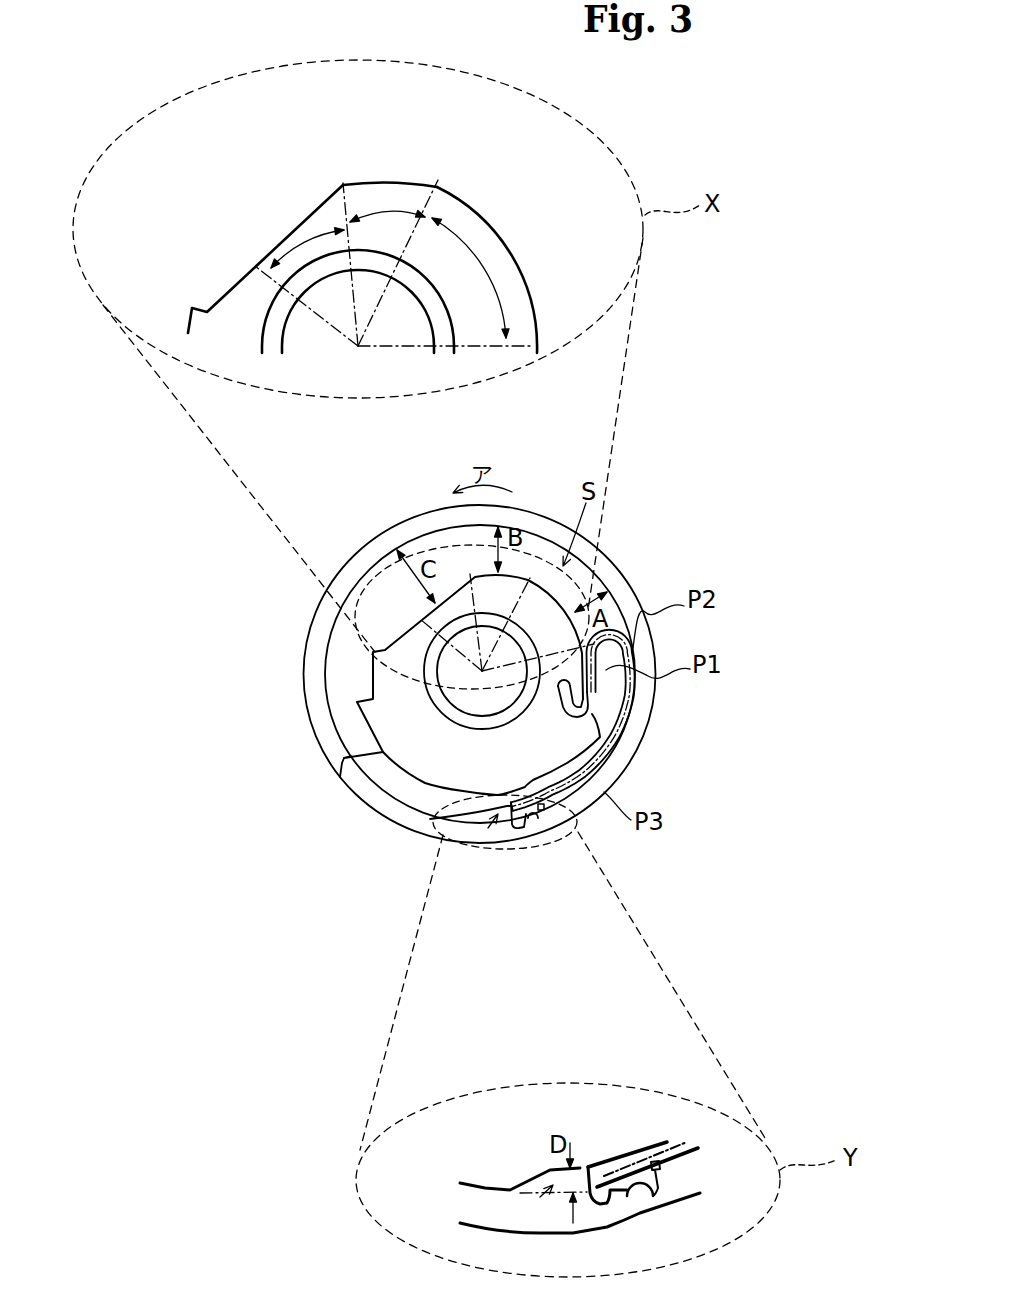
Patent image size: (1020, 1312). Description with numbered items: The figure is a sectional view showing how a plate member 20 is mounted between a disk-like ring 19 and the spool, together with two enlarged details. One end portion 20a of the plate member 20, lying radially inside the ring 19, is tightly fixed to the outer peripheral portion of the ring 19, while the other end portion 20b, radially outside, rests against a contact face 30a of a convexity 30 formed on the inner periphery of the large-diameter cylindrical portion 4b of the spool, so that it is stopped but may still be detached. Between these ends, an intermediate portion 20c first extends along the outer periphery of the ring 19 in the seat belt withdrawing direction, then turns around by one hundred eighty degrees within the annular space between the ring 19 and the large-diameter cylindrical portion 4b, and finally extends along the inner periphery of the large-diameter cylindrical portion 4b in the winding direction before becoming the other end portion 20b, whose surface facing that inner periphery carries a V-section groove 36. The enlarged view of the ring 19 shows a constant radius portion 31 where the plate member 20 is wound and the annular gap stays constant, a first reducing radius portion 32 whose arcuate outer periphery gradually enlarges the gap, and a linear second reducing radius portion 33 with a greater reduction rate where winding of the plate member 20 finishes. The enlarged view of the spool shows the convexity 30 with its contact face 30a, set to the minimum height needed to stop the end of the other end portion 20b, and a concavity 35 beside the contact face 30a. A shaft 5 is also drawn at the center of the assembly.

The large-diameter cylindrical portion 4b is at (305, 685).
The shaft 5 is at (470, 713).
The ring 19 is at (340, 777).
The plate member 20 is at (643, 710).
The one end portion 20a is at (558, 698).
The other end portion 20b is at (521, 797).
The intermediate portion 20c is at (618, 748).
The convexity 30 is at (497, 846).
The contact face 30a is at (522, 850).
The constant radius portion 31 is at (487, 270).
The first reducing radius portion 32 is at (390, 210).
The second reducing radius portion 33 is at (298, 250).
The concavity 35 is at (540, 815).
The groove 36 is at (550, 824).